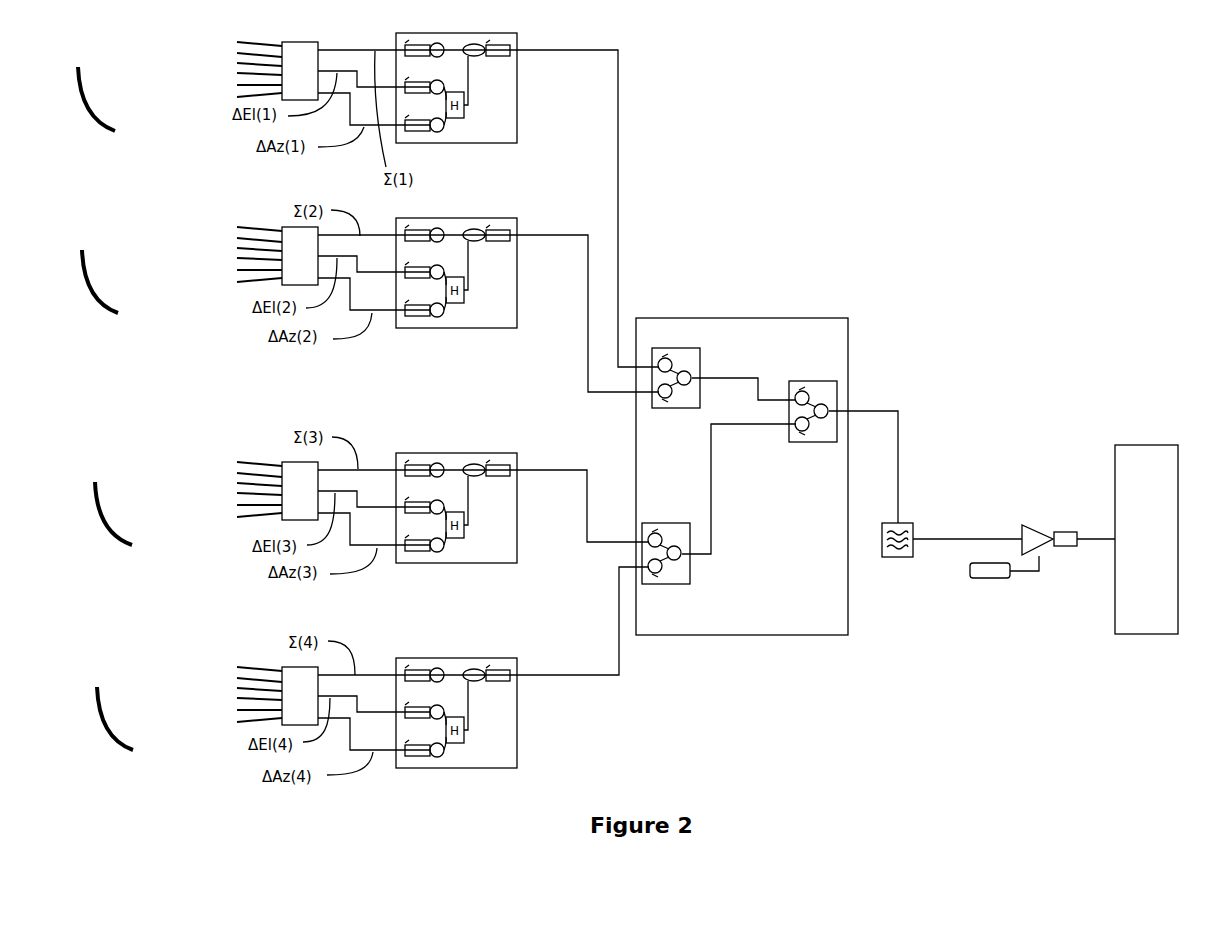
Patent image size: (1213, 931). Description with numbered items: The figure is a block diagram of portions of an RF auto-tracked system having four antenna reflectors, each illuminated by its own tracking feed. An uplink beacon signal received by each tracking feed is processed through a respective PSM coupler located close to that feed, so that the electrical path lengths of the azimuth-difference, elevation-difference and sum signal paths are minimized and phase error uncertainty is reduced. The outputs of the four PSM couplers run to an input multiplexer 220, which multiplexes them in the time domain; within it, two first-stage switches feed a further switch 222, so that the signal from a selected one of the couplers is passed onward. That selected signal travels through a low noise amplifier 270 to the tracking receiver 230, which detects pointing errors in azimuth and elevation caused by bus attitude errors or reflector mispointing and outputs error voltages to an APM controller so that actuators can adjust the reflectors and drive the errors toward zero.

The input multiplexer 220 is at (848, 348).
The switch 222 is at (826, 443).
The tracking receiver 230 is at (1146, 539).
The low noise amplifier 270 is at (1036, 530).